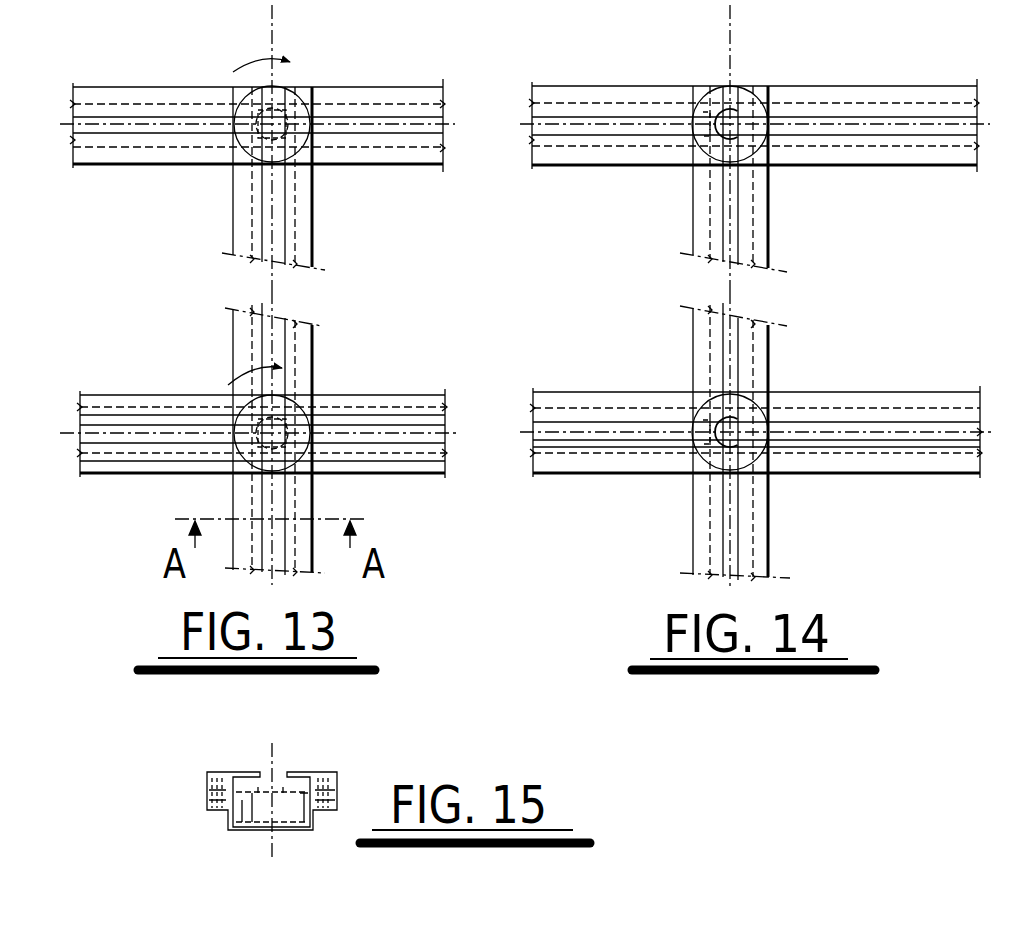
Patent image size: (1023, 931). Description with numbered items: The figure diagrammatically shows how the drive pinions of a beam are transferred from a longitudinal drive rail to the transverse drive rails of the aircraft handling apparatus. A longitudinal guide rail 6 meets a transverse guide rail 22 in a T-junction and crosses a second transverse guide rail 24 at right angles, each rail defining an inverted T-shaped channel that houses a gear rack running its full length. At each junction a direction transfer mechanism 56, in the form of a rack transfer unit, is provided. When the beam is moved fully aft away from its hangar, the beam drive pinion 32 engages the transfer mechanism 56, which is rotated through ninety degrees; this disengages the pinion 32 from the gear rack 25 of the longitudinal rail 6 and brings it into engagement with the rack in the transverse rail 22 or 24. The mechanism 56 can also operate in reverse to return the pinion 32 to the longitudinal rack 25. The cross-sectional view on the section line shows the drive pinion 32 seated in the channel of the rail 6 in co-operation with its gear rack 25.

In FIG. 13, the longitudinal guide rail 6 is at (300, 242).
In FIG. 14, the longitudinal guide rail 6 is at (763, 222).
In FIG. 15, the longitudinal guide rail 6 is at (282, 789).
In FIG. 13, the transverse guide rail 22 is at (108, 93).
In FIG. 14, the transverse guide rail 22 is at (598, 93).
In FIG. 13, the transverse guide rail 24 is at (132, 402).
In FIG. 14, the transverse guide rail 24 is at (575, 390).
In FIG. 13, the direction transfer mechanism 56 is at (300, 110).
In FIG. 14, the direction transfer mechanism 56 is at (740, 98).
In FIG. 15, the gear rack 25 is at (308, 808).
In FIG. 15, the beam drive pinion 32 is at (263, 823).